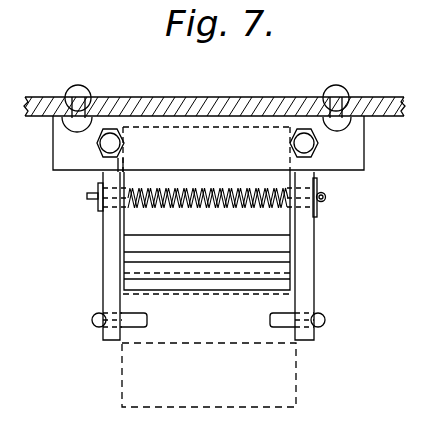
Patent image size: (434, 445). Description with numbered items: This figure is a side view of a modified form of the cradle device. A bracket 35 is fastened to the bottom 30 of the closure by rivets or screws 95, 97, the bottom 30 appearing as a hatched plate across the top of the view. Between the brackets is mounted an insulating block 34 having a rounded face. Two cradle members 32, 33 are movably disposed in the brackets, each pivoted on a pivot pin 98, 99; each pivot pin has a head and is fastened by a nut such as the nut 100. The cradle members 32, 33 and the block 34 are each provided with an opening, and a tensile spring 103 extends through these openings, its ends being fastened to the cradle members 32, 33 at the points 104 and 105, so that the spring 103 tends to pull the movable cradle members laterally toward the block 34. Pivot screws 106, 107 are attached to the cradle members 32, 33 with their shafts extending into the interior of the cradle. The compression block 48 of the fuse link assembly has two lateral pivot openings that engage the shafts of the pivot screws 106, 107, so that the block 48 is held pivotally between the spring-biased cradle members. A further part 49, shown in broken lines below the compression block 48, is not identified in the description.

The bottom of the closure 30 is at (265, 100).
The rivet or screw 95 is at (79, 91).
The rivet or screw 97 is at (340, 88).
The bracket 35 is at (352, 153).
The nut 100 is at (99, 152).
The pivot pin 98 is at (100, 158).
The pivot pin 99 is at (313, 157).
The cradle member 32 is at (110, 273).
The cradle member 33 is at (304, 288).
The insulating block 34 is at (280, 268).
The tensile spring 103 is at (173, 212).
The spring end fastening 104 is at (89, 199).
The spring end fastening 105 is at (314, 214).
The pivot screw 106 is at (99, 330).
The pivot screw 107 is at (318, 331).
The compression block 48 is at (287, 335).
The base plate 49 is at (289, 390).